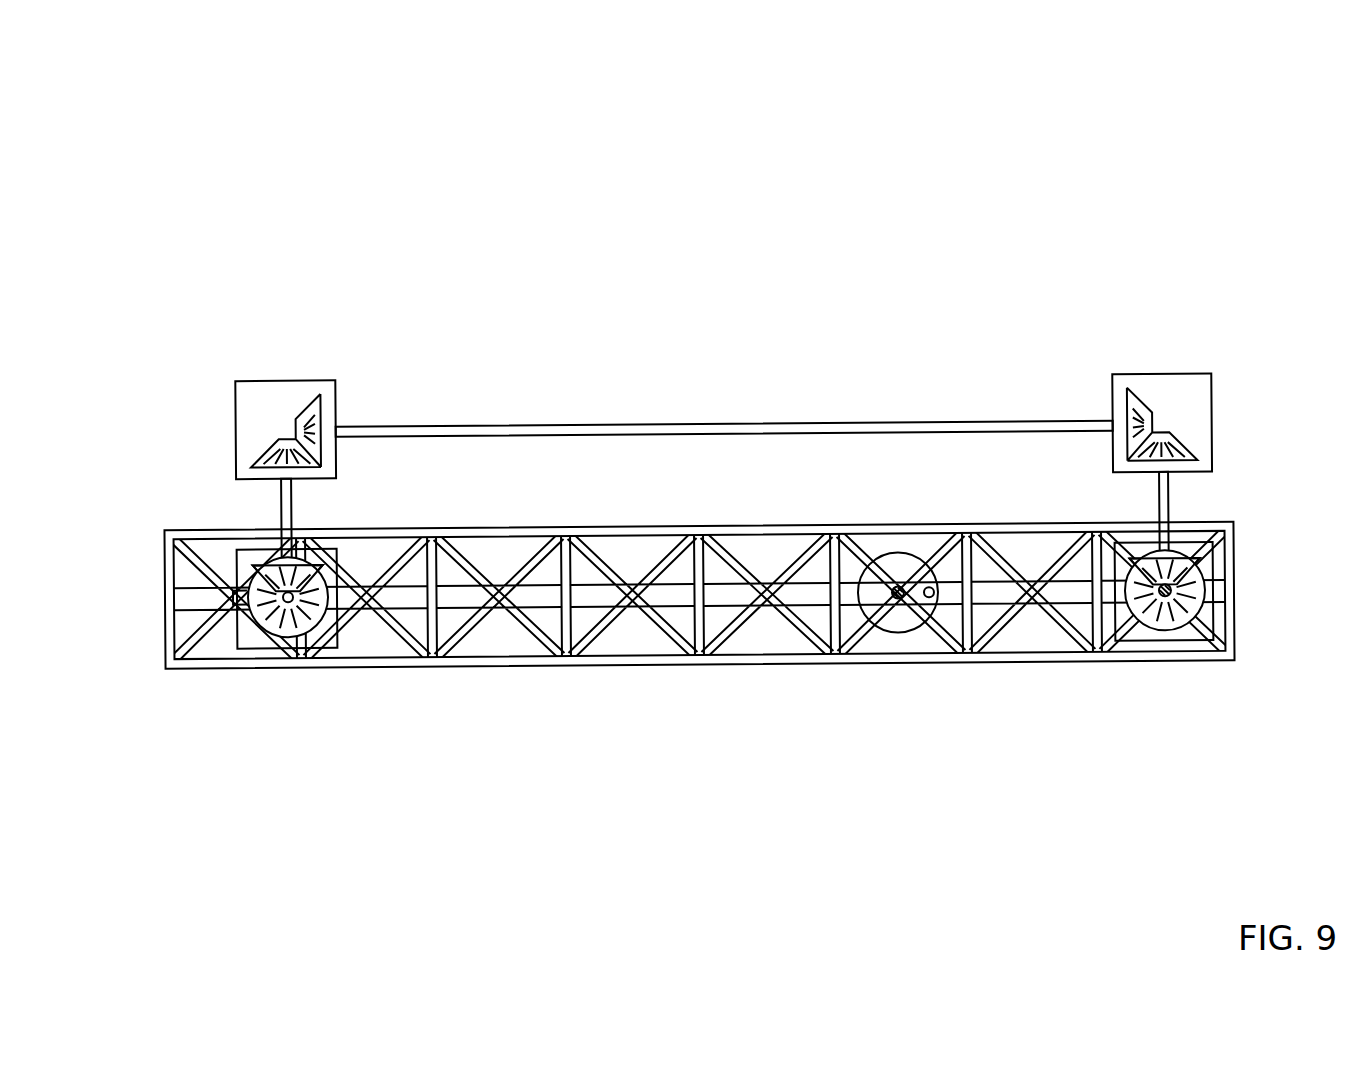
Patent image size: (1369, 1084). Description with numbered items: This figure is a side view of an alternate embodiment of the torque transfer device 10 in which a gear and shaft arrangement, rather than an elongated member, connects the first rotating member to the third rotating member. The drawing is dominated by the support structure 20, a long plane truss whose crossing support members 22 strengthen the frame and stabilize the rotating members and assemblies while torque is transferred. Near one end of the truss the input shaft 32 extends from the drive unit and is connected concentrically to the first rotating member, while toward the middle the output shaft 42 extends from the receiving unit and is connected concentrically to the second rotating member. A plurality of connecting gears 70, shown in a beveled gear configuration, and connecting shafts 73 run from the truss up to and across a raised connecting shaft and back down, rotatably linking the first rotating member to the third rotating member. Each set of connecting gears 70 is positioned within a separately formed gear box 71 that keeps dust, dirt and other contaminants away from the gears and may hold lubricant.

The torque transfer device 10 is at (190, 152).
The support structure 20 is at (699, 690).
The support members 22 is at (902, 667).
The input shaft 32 is at (1152, 622).
The output shaft 42 is at (898, 553).
The connecting gears 70 is at (693, 538).
The gear boxes 71 is at (272, 381).
The connecting shafts 73 is at (540, 427).